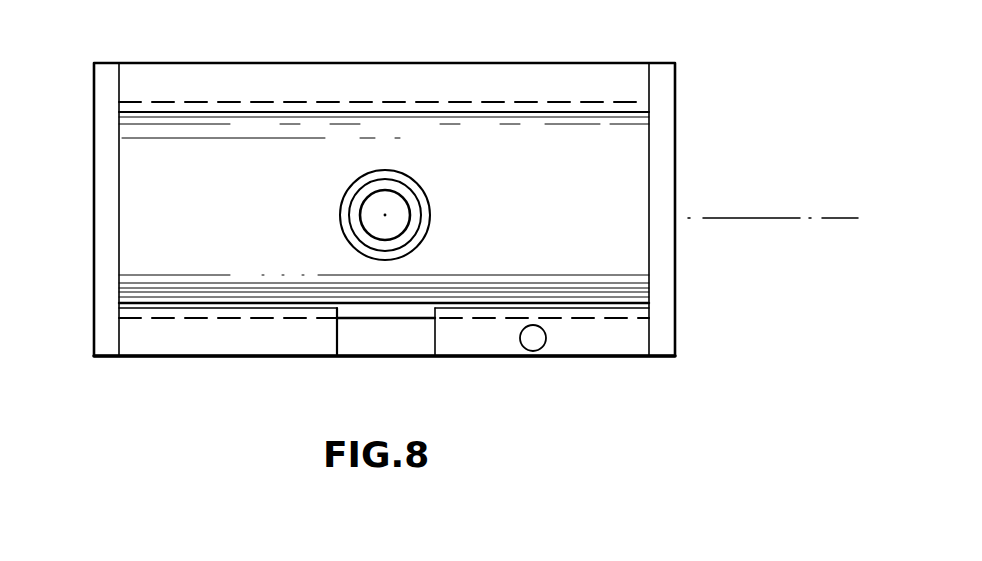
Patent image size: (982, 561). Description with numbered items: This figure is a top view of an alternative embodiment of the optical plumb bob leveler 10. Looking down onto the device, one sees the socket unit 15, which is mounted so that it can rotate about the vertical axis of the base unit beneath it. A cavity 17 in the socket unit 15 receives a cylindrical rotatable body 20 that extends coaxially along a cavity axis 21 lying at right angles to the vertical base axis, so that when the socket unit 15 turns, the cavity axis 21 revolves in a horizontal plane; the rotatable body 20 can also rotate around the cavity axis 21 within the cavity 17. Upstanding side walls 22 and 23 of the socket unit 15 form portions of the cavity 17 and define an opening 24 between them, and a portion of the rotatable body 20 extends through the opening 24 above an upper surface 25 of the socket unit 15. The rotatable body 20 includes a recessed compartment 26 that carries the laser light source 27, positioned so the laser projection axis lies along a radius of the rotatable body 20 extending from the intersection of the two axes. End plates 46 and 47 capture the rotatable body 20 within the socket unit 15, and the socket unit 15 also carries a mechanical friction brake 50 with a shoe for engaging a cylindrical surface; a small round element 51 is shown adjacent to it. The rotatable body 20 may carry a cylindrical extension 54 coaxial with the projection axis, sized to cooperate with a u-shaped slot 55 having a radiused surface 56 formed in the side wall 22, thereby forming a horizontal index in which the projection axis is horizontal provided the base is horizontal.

The optical plumb bob leveler 10 is at (693, 192).
The socket unit 15 is at (527, 85).
The cavity 17 is at (610, 318).
The rotatable body 20 is at (145, 228).
The cavity axis 21 is at (788, 194).
The side wall 22 is at (203, 358).
The side wall 23 is at (441, 62).
The opening 24 is at (598, 118).
The upper surface 25 is at (322, 73).
The recessed compartment 26 is at (418, 211).
The laser light source 27 is at (395, 208).
The end plate 46 is at (95, 140).
The end plate 47 is at (675, 145).
The mechanical friction brake 50 is at (540, 342).
The pin 51 is at (553, 353).
The cylindrical extension 54 is at (417, 240).
The u-shaped slot 55 is at (337, 338).
The radiused surface 56 is at (400, 347).